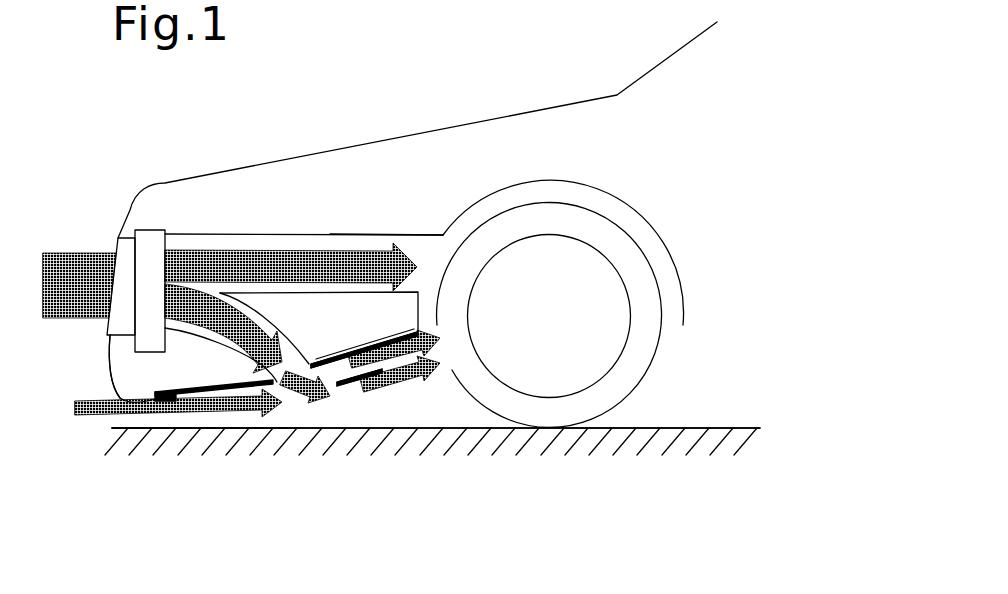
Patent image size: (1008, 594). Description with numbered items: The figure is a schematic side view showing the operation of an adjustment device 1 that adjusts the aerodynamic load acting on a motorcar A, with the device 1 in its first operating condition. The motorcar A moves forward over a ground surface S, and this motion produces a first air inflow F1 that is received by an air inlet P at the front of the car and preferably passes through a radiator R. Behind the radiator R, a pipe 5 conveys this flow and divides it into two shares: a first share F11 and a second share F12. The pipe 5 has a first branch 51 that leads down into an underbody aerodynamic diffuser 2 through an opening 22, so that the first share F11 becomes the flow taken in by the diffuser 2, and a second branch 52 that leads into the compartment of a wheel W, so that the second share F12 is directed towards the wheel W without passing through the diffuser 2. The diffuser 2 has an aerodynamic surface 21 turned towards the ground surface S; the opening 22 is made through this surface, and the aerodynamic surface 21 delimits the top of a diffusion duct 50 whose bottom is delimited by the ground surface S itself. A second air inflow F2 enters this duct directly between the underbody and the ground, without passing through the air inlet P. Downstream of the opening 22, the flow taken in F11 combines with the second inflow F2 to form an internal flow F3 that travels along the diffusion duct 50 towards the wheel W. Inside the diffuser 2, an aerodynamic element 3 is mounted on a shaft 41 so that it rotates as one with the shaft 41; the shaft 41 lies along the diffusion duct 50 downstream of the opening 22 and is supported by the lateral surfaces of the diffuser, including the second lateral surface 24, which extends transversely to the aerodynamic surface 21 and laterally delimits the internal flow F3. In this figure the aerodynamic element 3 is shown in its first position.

The adjustment device 1 is at (452, 415).
The underbody aerodynamic diffuser 2 is at (163, 384).
The aerodynamic surface 21 is at (117, 400).
The opening 22 is at (350, 357).
The second lateral surface 24 is at (213, 445).
The aerodynamic element 3 is at (346, 410).
The shaft 41 is at (360, 388).
The pipe 5 is at (247, 222).
The diffusion duct 50 is at (158, 442).
The first branch 51 is at (310, 360).
The second branch 52 is at (397, 230).
The motorcar A is at (352, 133).
The air inlet P is at (110, 222).
The radiator R is at (150, 210).
The wheel W is at (575, 222).
The ground surface S is at (745, 428).
The first air inflow F1 is at (60, 250).
The second share of the first inflow F12 is at (328, 258).
The first share of the first inflow F11 is at (293, 422).
The second air inflow F2 is at (87, 433).
The internal flow F3 is at (404, 412).